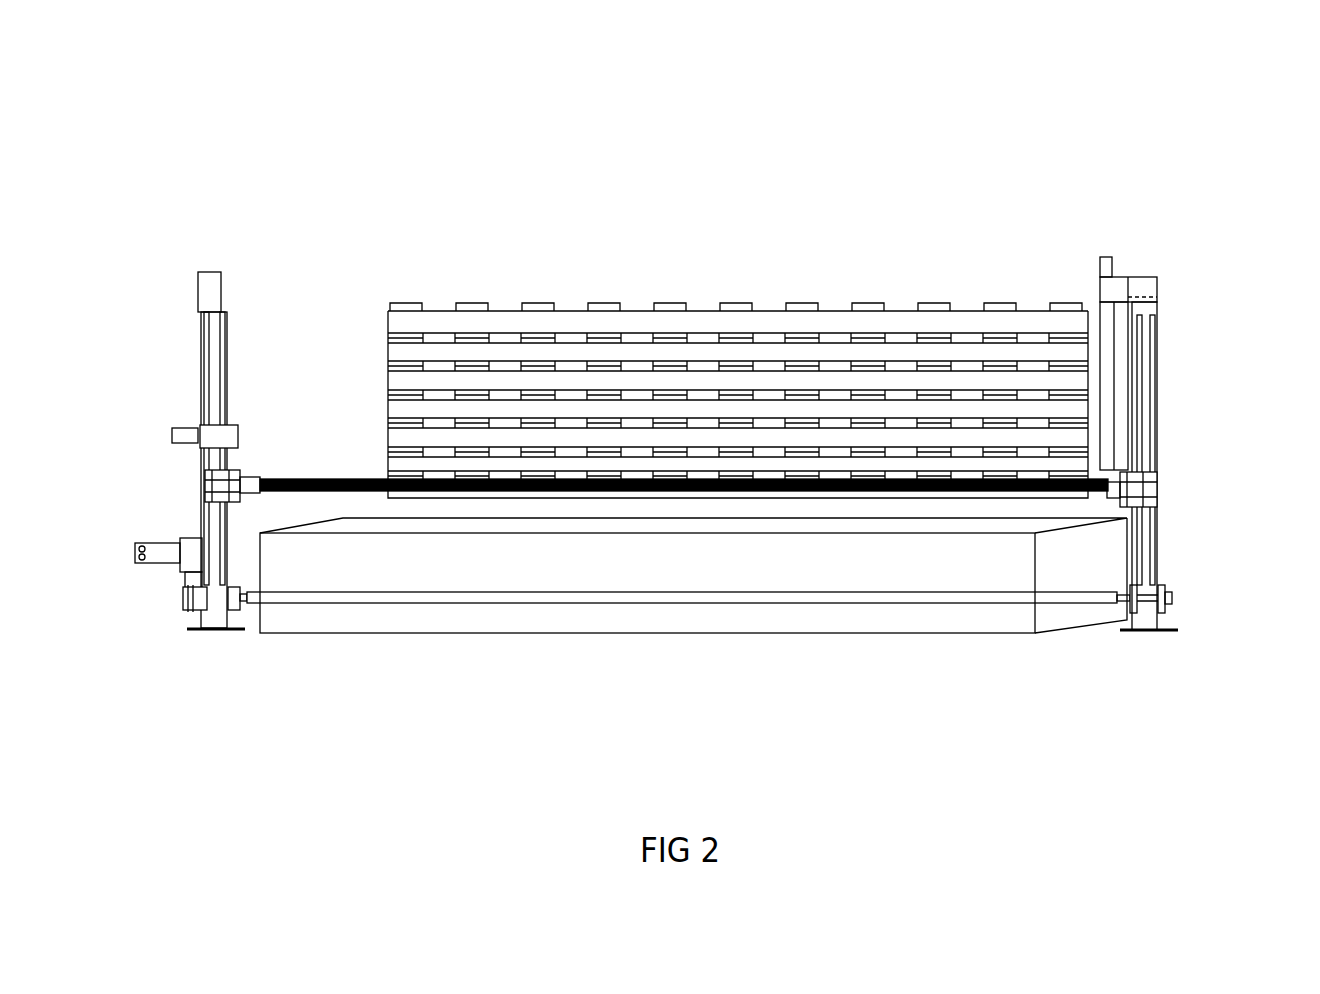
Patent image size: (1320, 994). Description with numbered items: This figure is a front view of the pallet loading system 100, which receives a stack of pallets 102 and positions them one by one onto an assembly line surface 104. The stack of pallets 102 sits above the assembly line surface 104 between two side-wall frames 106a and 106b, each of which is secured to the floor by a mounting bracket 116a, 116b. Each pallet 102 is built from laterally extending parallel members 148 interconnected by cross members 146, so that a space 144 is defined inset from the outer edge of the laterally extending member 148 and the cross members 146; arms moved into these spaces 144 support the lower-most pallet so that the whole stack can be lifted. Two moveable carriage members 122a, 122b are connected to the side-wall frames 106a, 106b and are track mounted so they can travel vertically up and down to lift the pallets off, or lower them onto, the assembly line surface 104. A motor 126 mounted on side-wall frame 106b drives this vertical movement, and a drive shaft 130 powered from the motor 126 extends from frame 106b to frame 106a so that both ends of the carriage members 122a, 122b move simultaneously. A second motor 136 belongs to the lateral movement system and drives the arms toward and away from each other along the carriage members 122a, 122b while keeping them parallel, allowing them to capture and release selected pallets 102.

The pallet loading system 100 is at (677, 212).
The pallet 102 is at (733, 283).
The assembly line surface 104 is at (679, 571).
The side-wall frame 106a is at (1143, 258).
The side-wall frame 106b is at (203, 251).
The mounting bracket 116a is at (1134, 636).
The mounting bracket 116b is at (218, 641).
The carriage member 122a is at (1151, 499).
The carriage member 122b is at (203, 500).
The motor 126 is at (163, 566).
The drive shaft 130 is at (513, 601).
The motor 136 is at (184, 426).
The space 144 is at (383, 327).
The cross member 146 is at (503, 322).
The laterally extending parallel member 148 is at (410, 305).